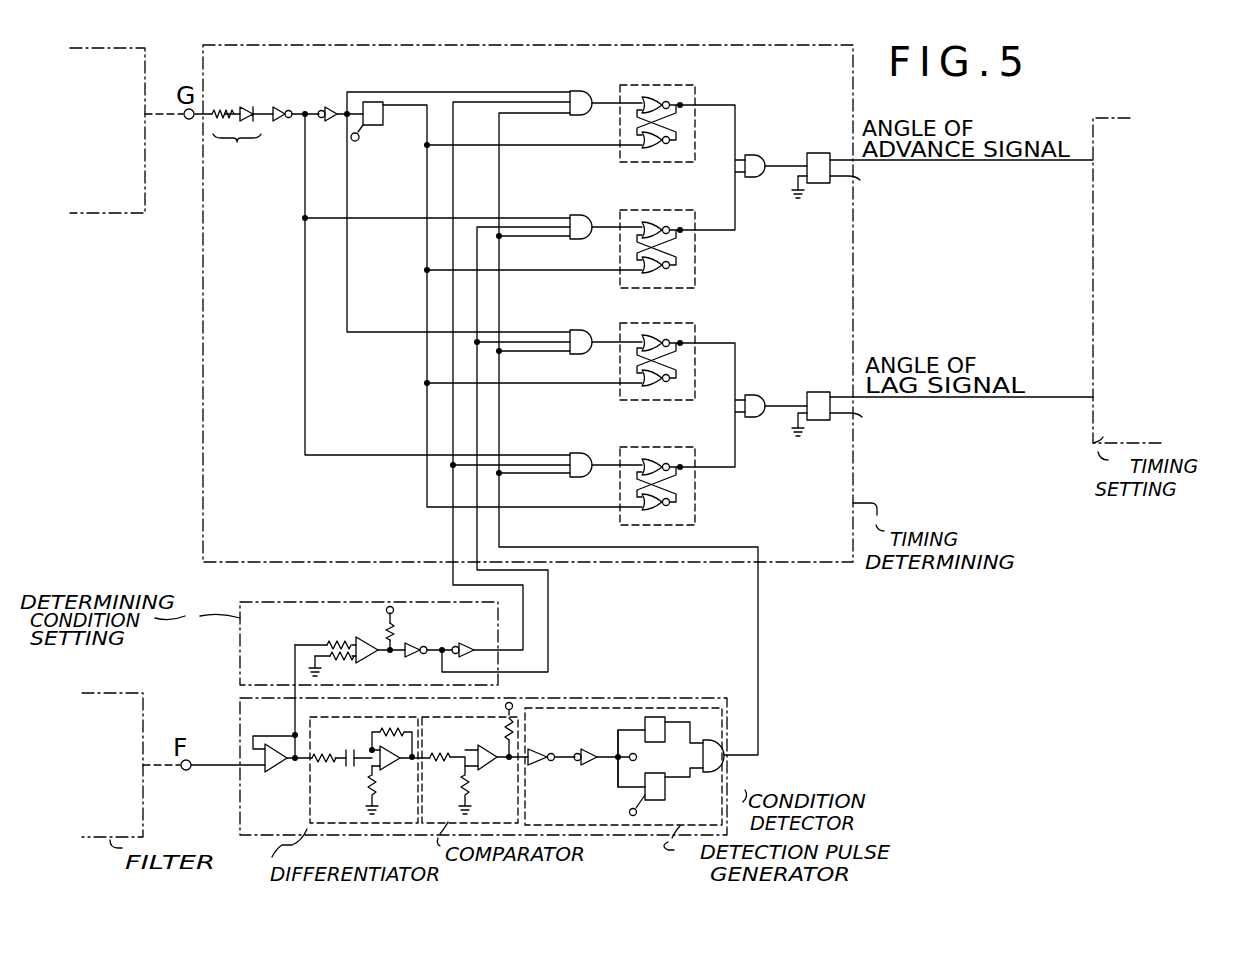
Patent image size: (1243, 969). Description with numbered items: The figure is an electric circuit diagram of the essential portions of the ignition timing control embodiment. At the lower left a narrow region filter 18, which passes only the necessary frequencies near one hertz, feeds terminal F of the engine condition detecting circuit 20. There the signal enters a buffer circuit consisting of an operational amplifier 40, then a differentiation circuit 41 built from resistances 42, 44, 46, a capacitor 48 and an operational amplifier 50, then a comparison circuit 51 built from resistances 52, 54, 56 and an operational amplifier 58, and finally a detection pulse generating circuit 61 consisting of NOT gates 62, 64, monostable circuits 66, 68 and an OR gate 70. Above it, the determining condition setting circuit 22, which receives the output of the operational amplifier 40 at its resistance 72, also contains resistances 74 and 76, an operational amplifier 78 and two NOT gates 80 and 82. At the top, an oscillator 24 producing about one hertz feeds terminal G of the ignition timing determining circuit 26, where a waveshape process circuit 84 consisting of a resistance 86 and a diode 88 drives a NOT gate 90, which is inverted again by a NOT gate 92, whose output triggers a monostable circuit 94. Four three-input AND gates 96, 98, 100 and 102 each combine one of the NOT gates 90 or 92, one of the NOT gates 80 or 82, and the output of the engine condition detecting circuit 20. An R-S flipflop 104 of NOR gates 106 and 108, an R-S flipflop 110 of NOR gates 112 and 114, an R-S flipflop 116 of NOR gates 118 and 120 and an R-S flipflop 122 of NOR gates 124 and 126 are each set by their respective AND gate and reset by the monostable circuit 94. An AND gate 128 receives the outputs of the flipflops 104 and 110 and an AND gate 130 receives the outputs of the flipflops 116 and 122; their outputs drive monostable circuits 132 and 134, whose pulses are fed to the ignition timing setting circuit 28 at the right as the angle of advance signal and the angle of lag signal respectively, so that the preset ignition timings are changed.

The narrow region filter 18 is at (115, 693).
The engine condition detecting circuit 20 is at (708, 700).
The determining condition setting circuit 22 is at (348, 602).
The oscillator 24 is at (110, 214).
The ignition timing determining circuit 26 is at (203, 550).
The ignition timing setting circuit 28 is at (1093, 293).
The operational amplifier 40 is at (283, 768).
The differentiation circuit 41 is at (308, 782).
The resistance 42 is at (308, 746).
The resistance 44 is at (382, 730).
The resistance 46 is at (365, 796).
The capacitor 48 is at (350, 767).
The operational amplifier 50 is at (390, 772).
The comparison circuit 51 is at (490, 716).
The resistance 52 is at (445, 748).
The resistance 54 is at (462, 778).
The resistance 56 is at (518, 735).
The operational amplifier 58 is at (490, 772).
The detection pulse generating circuit 61 is at (666, 719).
The NOT gate 62 is at (540, 770).
The NOT gate 64 is at (589, 752).
The monostable circuit 66 is at (666, 749).
The monostable circuit 68 is at (666, 796).
The OR gate 70 is at (728, 754).
The resistance 72 is at (334, 644).
The resistance 74 is at (328, 652).
The resistance 76 is at (380, 640).
The operational amplifier 78 is at (368, 665).
The NOT gate 80 is at (419, 644).
The NOT gate 82 is at (467, 644).
The waveshape process circuit 84 is at (237, 155).
The resistance 86 is at (218, 112).
The diode 88 is at (248, 107).
The NOT gate 90 is at (283, 108).
The NOT gate 92 is at (329, 110).
The monostable circuit 94 is at (375, 125).
The three-input AND gate 96 is at (585, 90).
The three-input AND gate 98 is at (588, 210).
The three-input AND gate 100 is at (585, 324).
The three-input AND gate 102 is at (585, 452).
The R-S flipflop 104 is at (698, 100).
The NOR gate 106 is at (650, 92).
The NOR gate 108 is at (645, 149).
The R-S flipflop 110 is at (695, 215).
The NOR gate 112 is at (652, 219).
The NOR gate 114 is at (670, 280).
The R-S flipflop 116 is at (697, 335).
The NOR gate 118 is at (660, 332).
The NOR gate 120 is at (640, 388).
The R-S flipflop 122 is at (692, 455).
The NOR gate 124 is at (648, 447).
The NOR gate 126 is at (672, 524).
The AND gate 128 is at (758, 155).
The AND gate 130 is at (760, 395).
The monostable circuit 132 is at (815, 149).
The monostable circuit 134 is at (815, 392).